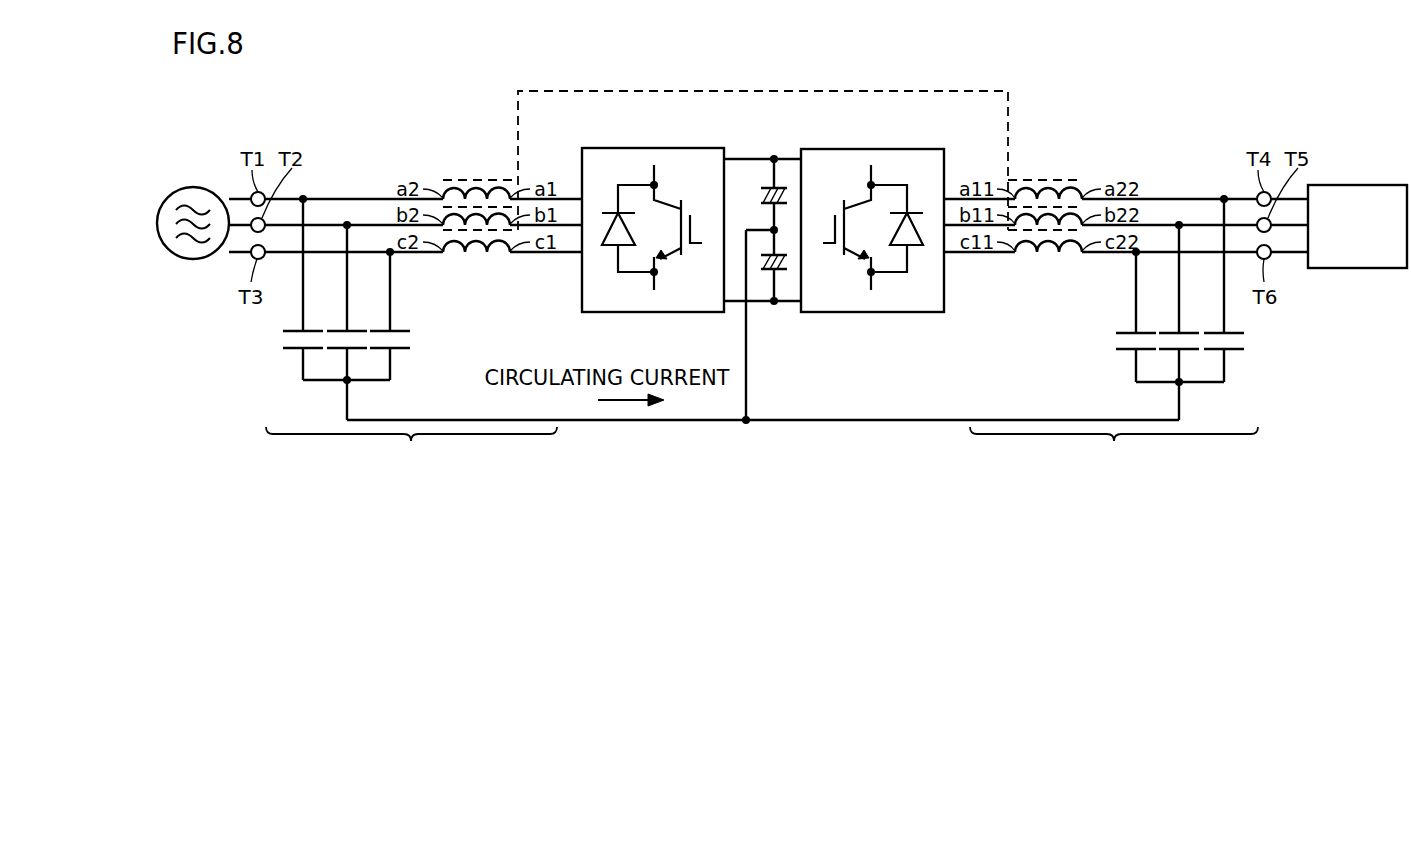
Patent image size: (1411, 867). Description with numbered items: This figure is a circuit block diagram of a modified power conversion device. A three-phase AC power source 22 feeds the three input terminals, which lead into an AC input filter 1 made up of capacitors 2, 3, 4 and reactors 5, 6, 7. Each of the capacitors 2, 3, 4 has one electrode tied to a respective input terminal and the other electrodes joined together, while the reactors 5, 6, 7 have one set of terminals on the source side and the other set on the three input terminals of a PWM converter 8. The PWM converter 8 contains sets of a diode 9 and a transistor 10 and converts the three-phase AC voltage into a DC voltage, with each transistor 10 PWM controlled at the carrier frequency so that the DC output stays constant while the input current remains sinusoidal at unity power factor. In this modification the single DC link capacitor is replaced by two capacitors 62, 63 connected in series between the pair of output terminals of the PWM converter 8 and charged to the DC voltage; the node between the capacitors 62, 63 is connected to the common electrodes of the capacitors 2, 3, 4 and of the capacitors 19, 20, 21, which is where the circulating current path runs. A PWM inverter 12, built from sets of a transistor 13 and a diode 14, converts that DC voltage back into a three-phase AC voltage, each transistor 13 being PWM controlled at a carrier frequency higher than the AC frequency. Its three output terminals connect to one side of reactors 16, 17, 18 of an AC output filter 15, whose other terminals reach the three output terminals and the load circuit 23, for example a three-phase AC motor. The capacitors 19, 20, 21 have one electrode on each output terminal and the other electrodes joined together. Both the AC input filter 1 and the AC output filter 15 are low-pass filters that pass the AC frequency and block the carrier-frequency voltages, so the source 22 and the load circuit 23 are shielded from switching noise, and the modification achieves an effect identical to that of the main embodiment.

The AC input filter 1 is at (411, 447).
The capacitor 2 is at (296, 328).
The capacitor 3 is at (339, 328).
The capacitor 4 is at (383, 328).
The reactor 5 is at (471, 187).
The reactor 6 is at (498, 213).
The reactor 7 is at (478, 254).
The PWM converter 8 is at (653, 207).
The diode 9 is at (613, 243).
The transistor 10 is at (664, 203).
The PWM inverter 12 is at (872, 207).
The transistor 13 is at (863, 203).
The diode 14 is at (911, 243).
The AC output filter 15 is at (1114, 447).
The reactor 16 is at (1043, 187).
The reactor 17 is at (1070, 213).
The reactor 18 is at (1050, 254).
The capacitor 19 is at (1127, 328).
The capacitor 20 is at (1170, 328).
The capacitor 21 is at (1214, 328).
The three-phase AC power source 22 is at (195, 260).
The load circuit 23 is at (1358, 268).
The capacitor 62 is at (765, 185).
The capacitor 63 is at (782, 274).